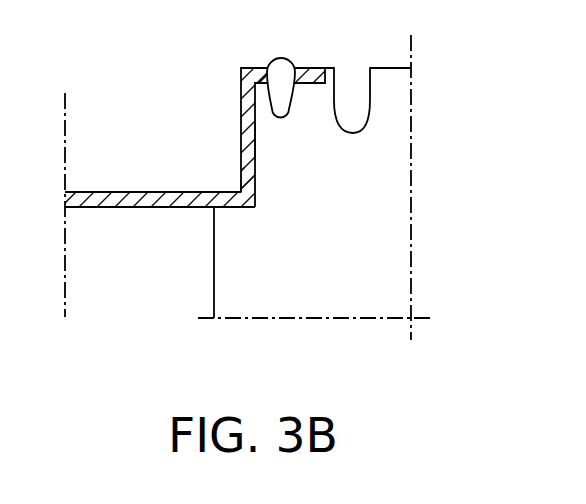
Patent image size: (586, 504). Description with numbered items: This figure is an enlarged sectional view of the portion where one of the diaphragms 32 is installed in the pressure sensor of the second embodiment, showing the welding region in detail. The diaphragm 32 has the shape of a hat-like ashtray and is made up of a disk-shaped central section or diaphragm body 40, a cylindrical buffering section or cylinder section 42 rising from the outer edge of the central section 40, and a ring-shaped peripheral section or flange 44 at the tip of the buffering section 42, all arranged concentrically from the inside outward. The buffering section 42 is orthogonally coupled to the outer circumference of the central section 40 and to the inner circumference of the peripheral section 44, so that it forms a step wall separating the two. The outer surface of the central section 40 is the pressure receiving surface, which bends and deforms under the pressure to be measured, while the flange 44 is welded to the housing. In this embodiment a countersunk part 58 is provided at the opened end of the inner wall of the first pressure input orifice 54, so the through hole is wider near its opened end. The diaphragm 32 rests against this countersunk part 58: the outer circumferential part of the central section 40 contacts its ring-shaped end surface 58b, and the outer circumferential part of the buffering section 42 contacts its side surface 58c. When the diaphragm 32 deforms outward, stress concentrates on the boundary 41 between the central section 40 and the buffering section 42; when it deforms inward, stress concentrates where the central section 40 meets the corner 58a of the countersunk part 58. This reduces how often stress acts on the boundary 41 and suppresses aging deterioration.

The diaphragm 32 is at (122, 192).
The central section (diaphragm body) 40 is at (107, 207).
The boundary 41 is at (241, 190).
The buffering section (cylinder section) 42 is at (241, 124).
The peripheral section (flange) 44 is at (251, 68).
The first pressure input orifice 54 is at (412, 187).
The countersunk part 58 is at (255, 175).
The corner of the countersunk part 58a is at (215, 208).
The ring-shaped end surface of the countersunk part 58b is at (248, 207).
The side surface of the countersunk part 58c is at (256, 138).